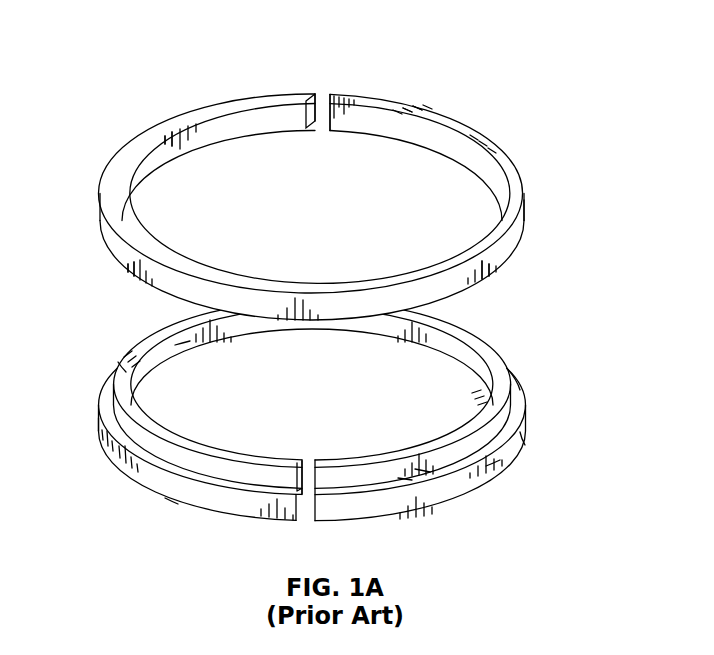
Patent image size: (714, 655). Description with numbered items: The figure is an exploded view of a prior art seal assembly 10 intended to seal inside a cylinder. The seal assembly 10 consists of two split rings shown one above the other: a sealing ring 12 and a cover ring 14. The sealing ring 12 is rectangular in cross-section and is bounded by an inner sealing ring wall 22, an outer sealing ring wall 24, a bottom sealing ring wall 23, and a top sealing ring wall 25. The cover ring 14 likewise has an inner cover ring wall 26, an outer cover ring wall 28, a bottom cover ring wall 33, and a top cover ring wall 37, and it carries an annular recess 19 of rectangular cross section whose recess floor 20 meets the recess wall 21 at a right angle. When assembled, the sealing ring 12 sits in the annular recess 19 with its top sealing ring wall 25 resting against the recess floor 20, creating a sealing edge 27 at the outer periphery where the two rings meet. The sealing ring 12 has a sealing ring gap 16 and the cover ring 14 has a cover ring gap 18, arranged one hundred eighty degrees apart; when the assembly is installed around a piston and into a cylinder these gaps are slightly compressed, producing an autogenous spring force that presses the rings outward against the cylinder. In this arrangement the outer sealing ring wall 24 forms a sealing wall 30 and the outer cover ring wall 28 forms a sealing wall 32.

The seal assembly 10 is at (111, 40).
The sealing ring 12 is at (508, 156).
The cover ring 14 is at (495, 345).
The sealing ring gap 16 is at (322, 97).
The cover ring gap 18 is at (300, 523).
The annular recess 19 is at (513, 399).
The recess floor 20 is at (405, 482).
The recess wall 21 is at (424, 471).
The inner sealing ring wall 22 is at (170, 143).
The bottom sealing ring wall 23 is at (413, 113).
The outer sealing ring wall 24 is at (500, 260).
The top sealing ring wall 25 is at (125, 264).
The inner cover ring wall 26 is at (182, 348).
The sealing edge 27 is at (100, 425).
The outer cover ring wall 28 is at (522, 438).
The sealing wall 30 is at (528, 225).
The sealing wall 32 is at (493, 468).
The bottom cover ring wall 33 is at (122, 362).
The top cover ring wall 37 is at (171, 500).